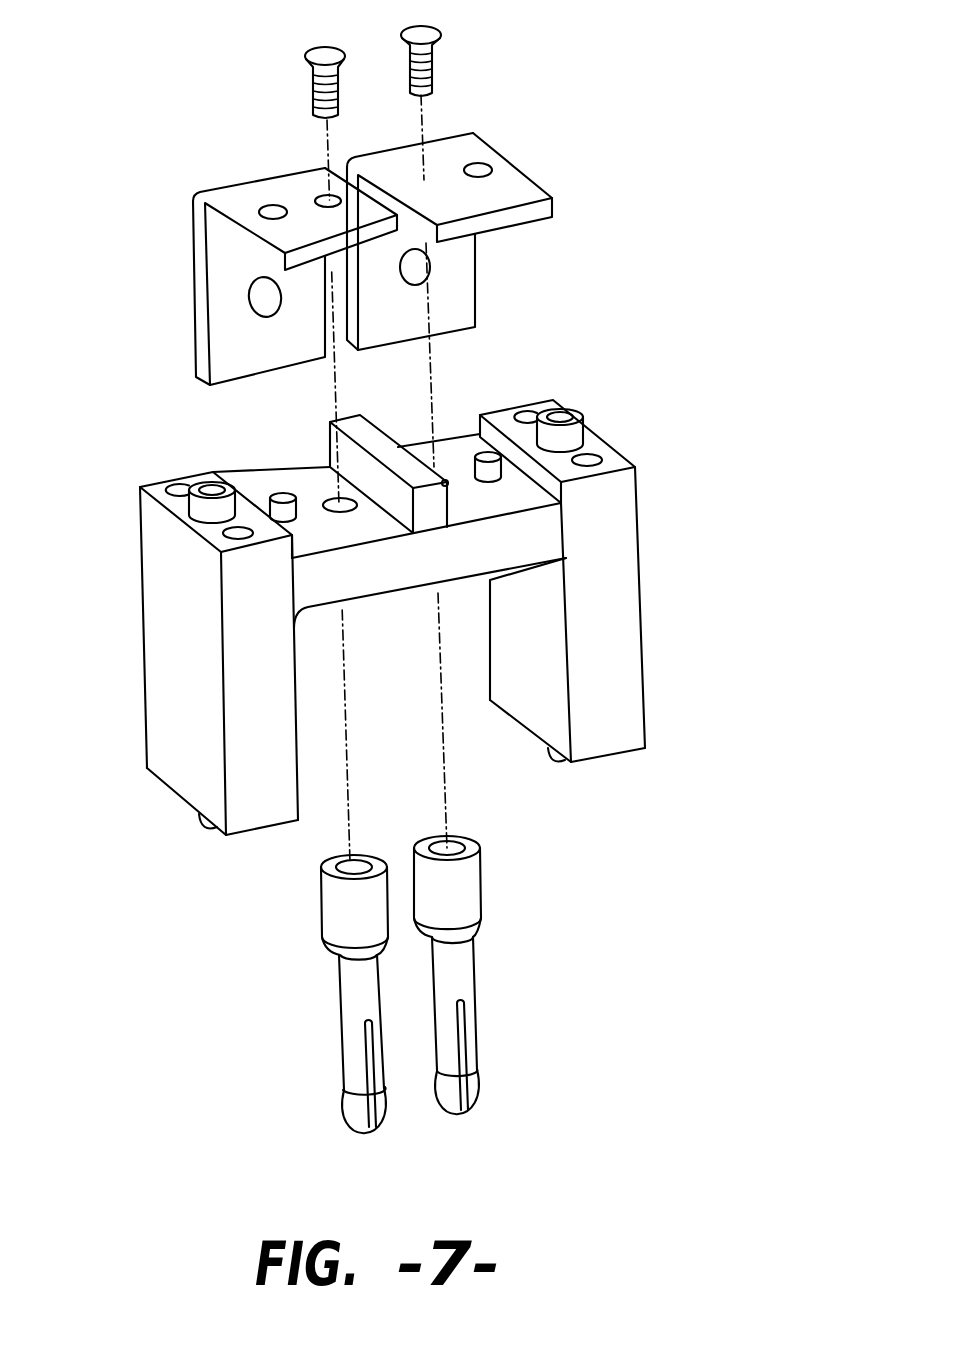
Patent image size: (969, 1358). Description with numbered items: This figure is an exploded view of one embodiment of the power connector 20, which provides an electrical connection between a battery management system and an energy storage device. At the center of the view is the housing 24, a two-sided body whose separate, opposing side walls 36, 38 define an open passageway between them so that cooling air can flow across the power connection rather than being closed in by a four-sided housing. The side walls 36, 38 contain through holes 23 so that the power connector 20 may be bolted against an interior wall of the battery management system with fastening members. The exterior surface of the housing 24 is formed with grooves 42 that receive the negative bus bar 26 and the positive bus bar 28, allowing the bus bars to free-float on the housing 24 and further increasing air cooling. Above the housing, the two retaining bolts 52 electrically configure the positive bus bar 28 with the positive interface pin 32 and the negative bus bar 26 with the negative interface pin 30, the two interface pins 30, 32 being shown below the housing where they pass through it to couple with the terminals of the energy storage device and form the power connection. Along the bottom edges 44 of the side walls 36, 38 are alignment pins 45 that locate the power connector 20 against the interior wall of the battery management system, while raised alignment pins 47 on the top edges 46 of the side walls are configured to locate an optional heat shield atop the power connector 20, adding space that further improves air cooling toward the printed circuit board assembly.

The power connector 20 is at (110, 388).
The through holes 23 is at (527, 412).
The housing 24 is at (501, 408).
The negative bus bar 26 is at (270, 200).
The positive bus bar 28 is at (463, 153).
The negative interface pin 30 is at (345, 1117).
The positive interface pin 32 is at (440, 1097).
The side wall 36 is at (258, 815).
The side wall 38 is at (633, 641).
The grooves 42 is at (323, 533).
The bottom edges 44 is at (163, 782).
The alignment pins 45 is at (212, 830).
The top edges 46 is at (175, 507).
The alignment pins 47 is at (228, 482).
The retaining bolts 52 is at (308, 88).